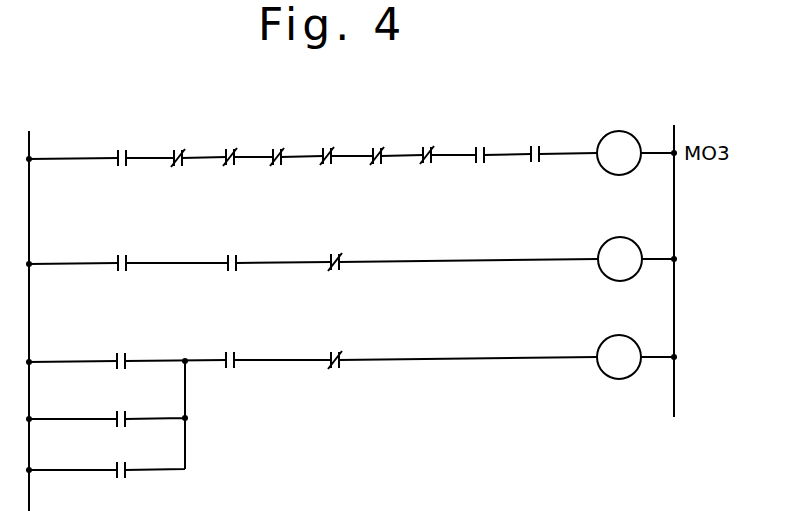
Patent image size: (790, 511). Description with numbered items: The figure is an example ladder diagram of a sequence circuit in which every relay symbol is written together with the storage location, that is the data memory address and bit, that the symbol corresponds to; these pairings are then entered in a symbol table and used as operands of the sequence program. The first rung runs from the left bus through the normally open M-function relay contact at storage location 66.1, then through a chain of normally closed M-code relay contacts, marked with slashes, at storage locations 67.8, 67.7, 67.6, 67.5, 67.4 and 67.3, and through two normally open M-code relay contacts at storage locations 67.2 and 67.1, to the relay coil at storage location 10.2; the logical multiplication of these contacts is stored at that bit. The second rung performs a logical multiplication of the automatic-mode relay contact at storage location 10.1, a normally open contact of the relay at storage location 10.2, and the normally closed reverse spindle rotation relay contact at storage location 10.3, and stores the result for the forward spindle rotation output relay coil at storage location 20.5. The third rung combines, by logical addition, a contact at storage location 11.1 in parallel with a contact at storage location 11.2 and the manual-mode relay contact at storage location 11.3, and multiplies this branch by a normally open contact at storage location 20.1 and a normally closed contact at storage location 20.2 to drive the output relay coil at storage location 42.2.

The storage location of relay contact MF 66.1 is at (115, 161).
The storage location of relay contact M28 67.8 is at (176, 161).
The storage location of relay contact M24 67.7 is at (222, 160).
The storage location of relay contact M22 67.6 is at (275, 160).
The storage location of relay contact M21 67.5 is at (326, 159).
The storage location of relay contact M18 67.4 is at (375, 159).
The storage location of relay contact M14 67.3 is at (423, 158).
The storage location of relay contact M12 67.2 is at (473, 158).
The storage location of relay contact M11 67.1 is at (533, 157).
The storage location of relay M03 10.2 is at (618, 167).
The storage location of relay contact AUT 10.1 is at (119, 262).
The storage location of relay contact SPCCW 10.3 is at (336, 261).
The storage location of relay coil SPCW 20.5 is at (619, 272).
The storage location of relay contact HS.M 11.1 is at (123, 362).
The storage location of relay contact READY 20.1 is at (237, 361).
The storage location of relay contact CRH 20.2 is at (338, 361).
The storage location of relay coil CRA 42.2 is at (618, 371).
The storage location of relay contact J.M 11.2 is at (131, 425).
The storage location of relay contact MAN 11.3 is at (137, 476).